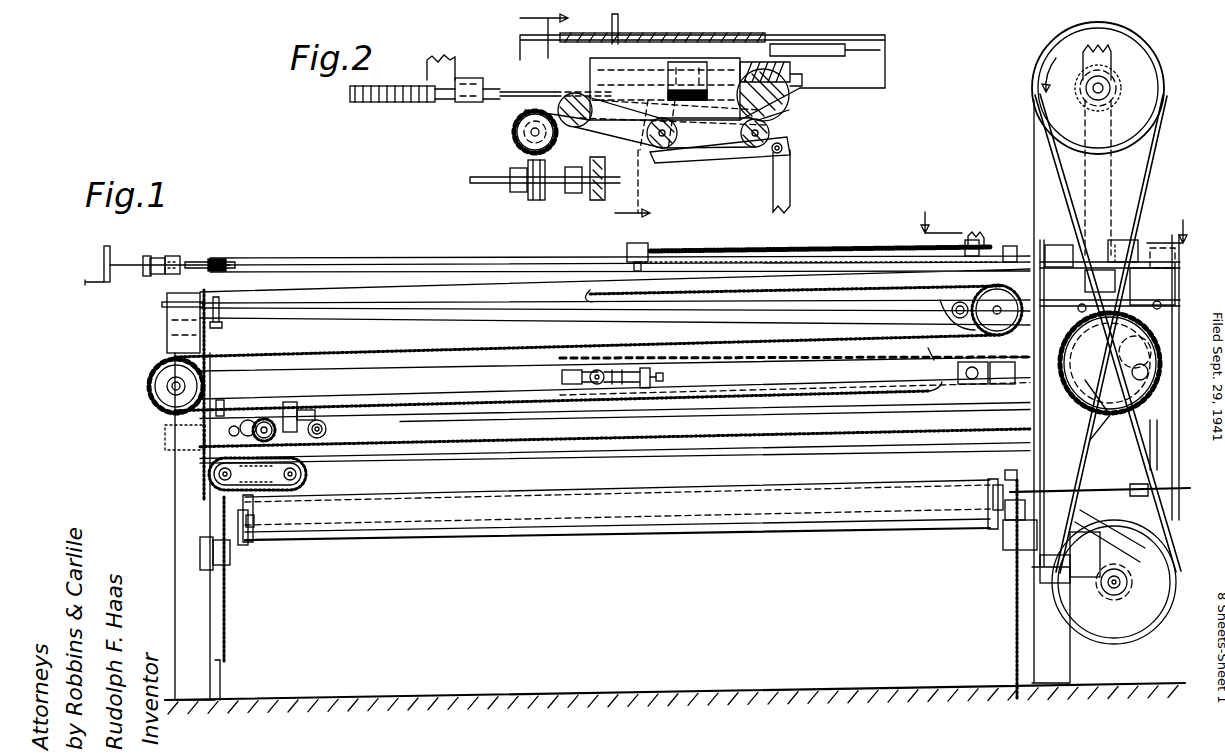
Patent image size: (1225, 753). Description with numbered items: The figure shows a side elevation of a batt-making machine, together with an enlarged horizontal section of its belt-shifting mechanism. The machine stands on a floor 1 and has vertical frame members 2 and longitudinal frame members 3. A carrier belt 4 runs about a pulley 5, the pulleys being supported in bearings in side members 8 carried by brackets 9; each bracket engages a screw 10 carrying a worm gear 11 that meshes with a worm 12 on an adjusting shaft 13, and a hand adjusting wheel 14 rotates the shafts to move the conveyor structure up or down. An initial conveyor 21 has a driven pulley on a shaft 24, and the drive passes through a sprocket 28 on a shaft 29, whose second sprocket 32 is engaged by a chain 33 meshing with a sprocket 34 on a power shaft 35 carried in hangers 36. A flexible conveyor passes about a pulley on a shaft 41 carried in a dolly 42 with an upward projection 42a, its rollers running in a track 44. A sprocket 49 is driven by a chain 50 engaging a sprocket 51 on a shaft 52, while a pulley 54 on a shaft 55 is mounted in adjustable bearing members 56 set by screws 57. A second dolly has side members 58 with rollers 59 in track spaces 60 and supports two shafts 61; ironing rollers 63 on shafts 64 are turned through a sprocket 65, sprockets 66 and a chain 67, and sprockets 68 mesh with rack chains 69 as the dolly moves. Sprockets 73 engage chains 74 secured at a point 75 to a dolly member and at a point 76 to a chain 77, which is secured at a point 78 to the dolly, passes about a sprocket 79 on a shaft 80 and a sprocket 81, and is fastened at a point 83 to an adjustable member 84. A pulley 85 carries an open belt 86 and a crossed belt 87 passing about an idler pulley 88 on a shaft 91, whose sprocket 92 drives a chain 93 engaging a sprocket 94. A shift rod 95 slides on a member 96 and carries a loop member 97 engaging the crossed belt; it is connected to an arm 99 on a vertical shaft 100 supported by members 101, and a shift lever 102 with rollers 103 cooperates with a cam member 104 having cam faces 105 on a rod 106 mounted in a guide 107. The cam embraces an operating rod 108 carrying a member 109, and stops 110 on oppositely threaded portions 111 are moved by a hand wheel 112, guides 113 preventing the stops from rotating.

In FIG. 1, the foundation or floor 1 is at (560, 690).
In FIG. 2, the vertical frame members 2 is at (582, 190).
In FIG. 1, the vertical frame members 2 is at (188, 677).
In FIG. 2, the longitudinal frame members 3 is at (886, 45).
In FIG. 1, the longitudinal frame members 3 is at (430, 276).
In FIG. 2, the belt or conveyor 4 is at (572, 116).
In FIG. 1, the belt or conveyor 4 is at (335, 546).
In FIG. 1, the roller or pulley 5 is at (255, 546).
In FIG. 1, the side members 8 is at (244, 546).
In FIG. 1, the brackets 9 is at (200, 550).
In FIG. 2, the screw 10 is at (532, 136).
In FIG. 1, the screw 10 is at (222, 322).
In FIG. 2, the worm gear 11 is at (512, 183).
In FIG. 1, the worm gear 11 is at (229, 259).
In FIG. 2, the worm 12 is at (537, 196).
In FIG. 1, the worm 12 is at (218, 262).
In FIG. 2, the control or adjusting shaft 13 is at (470, 180).
In FIG. 1, the control or adjusting shaft 13 is at (323, 263).
In FIG. 1, the hand adjusting wheel 14 is at (150, 278).
In FIG. 1, the initial conveyor 21 is at (1179, 248).
In FIG. 1, the shaft 24 is at (1157, 300).
In FIG. 1, the sprocket 28 is at (1110, 363).
In FIG. 1, the shaft 29 is at (1135, 350).
In FIG. 1, the second sprocket 32 is at (1170, 260).
In FIG. 1, the chain 33 is at (1113, 170).
In FIG. 1, the sprocket 34 is at (1098, 106).
In FIG. 1, the power shaft 35 is at (1106, 88).
In FIG. 1, the hangers 36 is at (1111, 62).
In FIG. 1, the shaft 41 is at (997, 310).
In FIG. 1, the dolly 42 is at (951, 310).
In FIG. 2, the upward projection 42a is at (440, 57).
In FIG. 1, the upward projection 42a is at (976, 231).
In FIG. 1, the channel groove or track 44 is at (487, 280).
In FIG. 1, the sprocket 49 is at (1030, 374).
In FIG. 1, the chain 50 is at (1000, 388).
In FIG. 1, the sprocket 51 is at (970, 388).
In FIG. 1, the shaft 52 is at (958, 372).
In FIG. 1, the pulley 54 is at (592, 358).
In FIG. 1, the shaft 55 is at (596, 385).
In FIG. 1, the adjustable bearing members 56 is at (562, 377).
In FIG. 1, the screws 57 is at (663, 377).
In FIG. 1, the dolly side members 58 is at (327, 431).
In FIG. 1, the rollers 59 is at (165, 432).
In FIG. 1, the track spaces 60 is at (460, 439).
In FIG. 1, the shafts 61 is at (250, 420).
In FIG. 1, the ironing rollers 63 is at (225, 490).
In FIG. 1, the shafts 64 is at (212, 478).
In FIG. 1, the sprocket 65 is at (270, 420).
In FIG. 1, the sprockets 66 is at (208, 470).
In FIG. 1, the chain 67 is at (262, 491).
In FIG. 1, the sprocket 68 is at (290, 402).
In FIG. 1, the rack 69 is at (395, 447).
In FIG. 1, the sprocket 73 is at (1141, 374).
In FIG. 1, the chains 74 is at (810, 406).
In FIG. 1, the securing point 75 is at (318, 412).
In FIG. 1, the securing point 76 is at (928, 350).
In FIG. 1, the chain 77 is at (760, 338).
In FIG. 1, the securing point 78 is at (221, 400).
In FIG. 1, the sprocket or pulley 79 is at (150, 388).
In FIG. 1, the shaft 80 is at (168, 382).
In FIG. 1, the sprocket or pulley 81 is at (942, 310).
In FIG. 1, the fastening point 83 is at (593, 300).
In FIG. 1, the adjustable member 84 is at (385, 311).
In FIG. 1, the pulley 85 is at (1140, 46).
In FIG. 1, the open belt 86 is at (1034, 152).
In FIG. 1, the crossed belt 87 is at (1057, 170).
In FIG. 1, the idler pulley 88 is at (1148, 644).
In FIG. 1, the shaft 91 is at (1120, 581).
In FIG. 1, the sprocket 92 is at (1128, 570).
In FIG. 1, the chain 93 is at (1158, 446).
In FIG. 1, the sprocket 94 is at (1114, 420).
In FIG. 2, the shift arm or rod 95 is at (791, 180).
In FIG. 1, the shift arm or rod 95 is at (1132, 483).
In FIG. 1, the member 96 is at (1100, 545).
In FIG. 1, the loop member 97 is at (1108, 489).
In FIG. 2, the arm 99 is at (742, 166).
In FIG. 1, the arm 99 is at (1107, 516).
In FIG. 2, the vertical shaft 100 is at (664, 148).
In FIG. 1, the vertical shaft 100 is at (1112, 501).
In FIG. 2, the members 101 is at (652, 160).
In FIG. 1, the members 101 is at (1005, 578).
In FIG. 2, the shift lever 102 is at (705, 160).
In FIG. 1, the shift lever 102 is at (1060, 247).
In FIG. 2, the rollers 103 is at (752, 148).
In FIG. 1, the rollers 103 is at (1030, 246).
In FIG. 2, the cam member 104 is at (781, 118).
In FIG. 1, the cam member 104 is at (1110, 240).
In FIG. 2, the cam faces 105 is at (789, 100).
In FIG. 2, the rod 106 is at (793, 46).
In FIG. 2, the guide or support 107 is at (655, 40).
In FIG. 2, the operating rod or shaft 108 is at (800, 78).
In FIG. 1, the operating rod or shaft 108 is at (393, 262).
In FIG. 2, the member 109 is at (690, 70).
In FIG. 2, the stops 110 is at (470, 103).
In FIG. 1, the stops 110 is at (642, 252).
In FIG. 2, the threaded portion 111 is at (385, 103).
In FIG. 1, the threaded portion 111 is at (700, 258).
In FIG. 1, the hand wheel 112 is at (104, 262).
In FIG. 1, the guides 113 is at (627, 262).